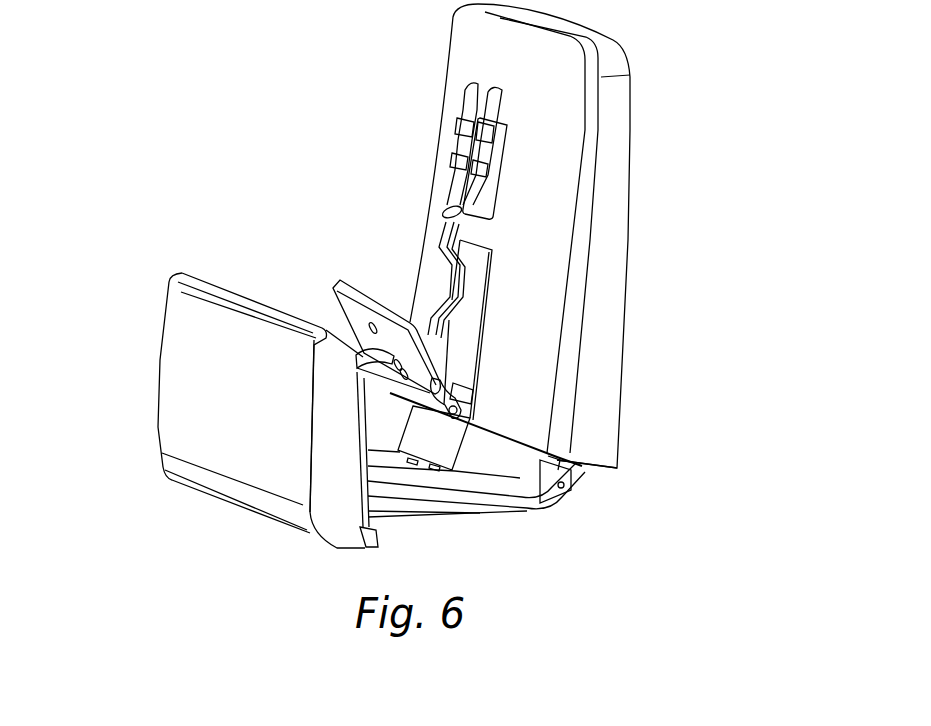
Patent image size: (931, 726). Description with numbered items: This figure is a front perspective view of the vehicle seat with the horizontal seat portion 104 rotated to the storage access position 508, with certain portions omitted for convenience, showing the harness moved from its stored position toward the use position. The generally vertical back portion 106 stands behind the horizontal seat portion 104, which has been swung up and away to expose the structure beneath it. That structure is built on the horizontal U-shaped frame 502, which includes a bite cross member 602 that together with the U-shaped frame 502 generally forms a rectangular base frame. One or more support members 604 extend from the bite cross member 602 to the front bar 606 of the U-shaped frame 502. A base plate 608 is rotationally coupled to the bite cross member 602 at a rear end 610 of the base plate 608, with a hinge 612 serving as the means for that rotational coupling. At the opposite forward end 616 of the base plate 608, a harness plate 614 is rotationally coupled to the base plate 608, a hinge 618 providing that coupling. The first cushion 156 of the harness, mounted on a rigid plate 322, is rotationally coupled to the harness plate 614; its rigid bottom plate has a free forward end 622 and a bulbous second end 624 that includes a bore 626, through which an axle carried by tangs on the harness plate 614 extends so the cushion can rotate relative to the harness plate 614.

The horizontal seat portion 104 is at (183, 322).
The vertical back portion 106 is at (597, 106).
The storage access position 508 is at (703, 193).
The free forward end 622 is at (336, 288).
The first cushion 156 is at (363, 288).
The rigid plate 322 is at (330, 288).
The bulbous second end 624 is at (488, 288).
The hinge 618 is at (471, 368).
The harness plate 614 is at (474, 400).
The forward end 616 is at (466, 440).
The rear end 610 is at (470, 440).
The hinge 612 is at (490, 452).
The bite cross member 602 is at (560, 463).
The bore 626 is at (422, 404).
The base plate 608 is at (400, 434).
The front bar 606 is at (372, 528).
The support members 604 is at (440, 480).
The horizontal U-shaped frame 502 is at (525, 513).